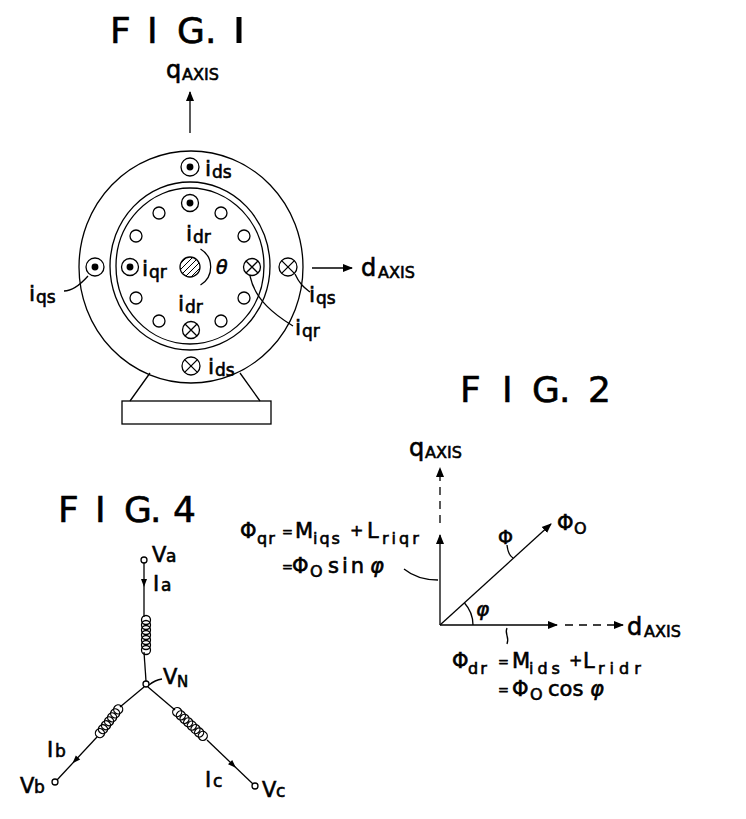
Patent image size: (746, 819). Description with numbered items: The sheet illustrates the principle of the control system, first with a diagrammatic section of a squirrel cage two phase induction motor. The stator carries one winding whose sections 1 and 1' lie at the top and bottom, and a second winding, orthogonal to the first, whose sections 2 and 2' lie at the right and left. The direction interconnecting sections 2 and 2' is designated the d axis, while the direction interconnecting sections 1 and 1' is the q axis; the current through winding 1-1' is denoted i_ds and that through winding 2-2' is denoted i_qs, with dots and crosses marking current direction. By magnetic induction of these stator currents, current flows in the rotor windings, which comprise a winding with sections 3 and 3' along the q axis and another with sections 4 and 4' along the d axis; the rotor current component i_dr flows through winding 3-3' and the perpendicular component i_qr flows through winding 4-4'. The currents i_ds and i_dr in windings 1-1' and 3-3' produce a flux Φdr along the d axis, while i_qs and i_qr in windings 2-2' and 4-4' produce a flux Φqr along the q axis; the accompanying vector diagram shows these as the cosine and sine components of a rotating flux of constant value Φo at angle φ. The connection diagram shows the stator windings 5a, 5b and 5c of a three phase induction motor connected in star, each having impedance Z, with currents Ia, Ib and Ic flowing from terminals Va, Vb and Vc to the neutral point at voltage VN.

In FIG. 1, the stator winding section 1 is at (179, 152).
In FIG. 1, the stator winding section 1' is at (203, 402).
In FIG. 1, the stator winding section 2 is at (305, 261).
In FIG. 1, the stator winding section 2' is at (75, 260).
In FIG. 1, the rotor winding section 3 is at (158, 178).
In FIG. 1, the rotor winding section 3' is at (150, 353).
In FIG. 1, the rotor winding section 4 is at (281, 248).
In FIG. 1, the rotor winding section 4' is at (97, 249).
In FIG. 4, the stator winding 5a is at (141, 640).
In FIG. 4, the stator winding 5b is at (111, 727).
In FIG. 4, the stator winding 5c is at (189, 725).